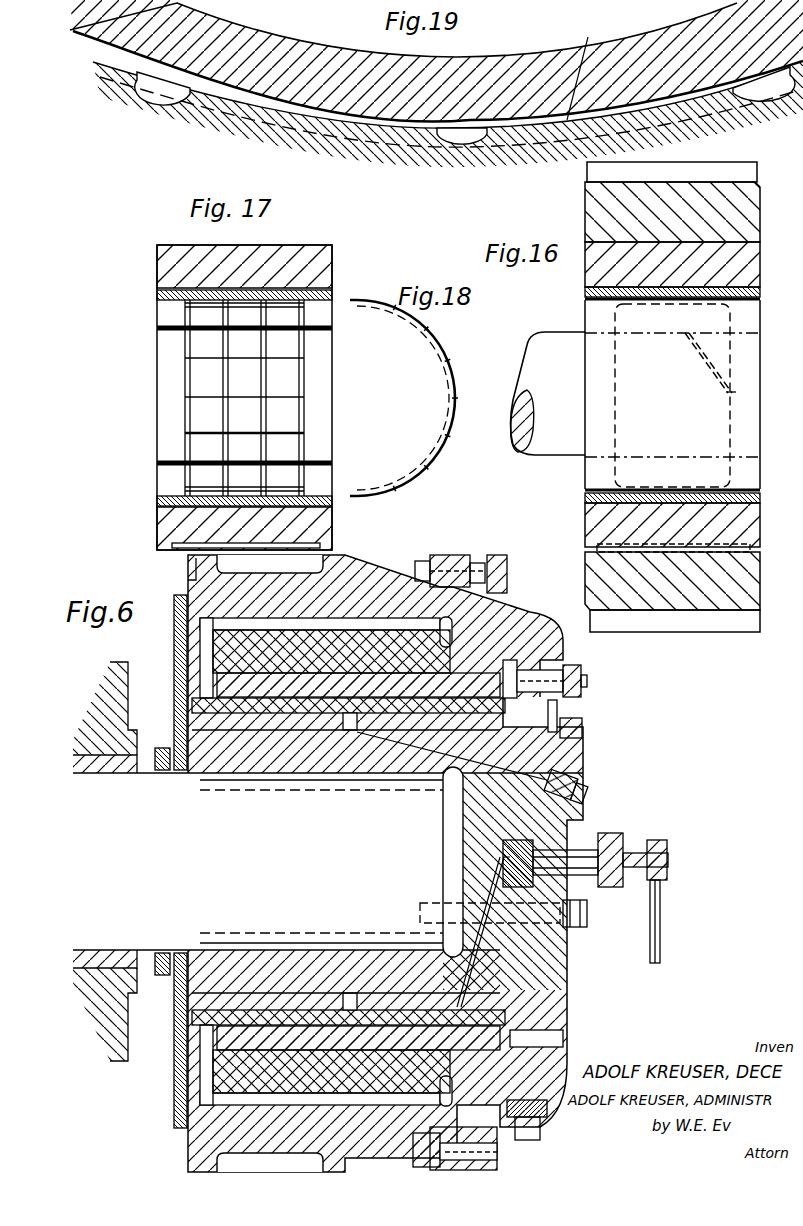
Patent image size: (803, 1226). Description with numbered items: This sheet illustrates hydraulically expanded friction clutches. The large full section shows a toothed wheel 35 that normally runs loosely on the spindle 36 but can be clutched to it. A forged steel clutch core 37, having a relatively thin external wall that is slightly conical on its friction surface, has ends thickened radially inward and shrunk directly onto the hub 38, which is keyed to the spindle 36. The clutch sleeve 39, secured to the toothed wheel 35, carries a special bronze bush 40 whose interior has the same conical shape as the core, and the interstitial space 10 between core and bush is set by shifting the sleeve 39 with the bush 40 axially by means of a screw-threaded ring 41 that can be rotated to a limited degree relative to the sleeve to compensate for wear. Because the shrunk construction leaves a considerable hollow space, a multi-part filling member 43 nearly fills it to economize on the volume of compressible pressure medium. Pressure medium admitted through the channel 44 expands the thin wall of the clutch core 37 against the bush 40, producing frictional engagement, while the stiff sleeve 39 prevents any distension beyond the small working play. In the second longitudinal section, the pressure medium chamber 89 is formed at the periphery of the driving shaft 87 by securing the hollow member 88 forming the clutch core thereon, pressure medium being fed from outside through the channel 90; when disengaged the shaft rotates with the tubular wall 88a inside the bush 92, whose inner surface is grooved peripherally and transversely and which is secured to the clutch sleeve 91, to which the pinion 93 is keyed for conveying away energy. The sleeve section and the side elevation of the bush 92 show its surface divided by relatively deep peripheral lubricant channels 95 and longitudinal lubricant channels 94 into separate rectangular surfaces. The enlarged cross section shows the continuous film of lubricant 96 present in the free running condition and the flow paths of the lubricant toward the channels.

In FIG. 6, the interstitial space 10 is at (433, 687).
In FIG. 6, the toothed wheel 35 is at (196, 580).
In FIG. 6, the spindle 36 is at (110, 932).
In FIG. 6, the clutch core 37 is at (197, 715).
In FIG. 6, the hub 38 is at (553, 757).
In FIG. 6, the clutch sleeve 39 is at (222, 650).
In FIG. 6, the bush 40 is at (217, 687).
In FIG. 6, the screw-threaded ring 41 is at (570, 712).
In FIG. 6, the filling member 43 is at (433, 722).
In FIG. 6, the channel 44 is at (470, 947).
In FIG. 16, the driving shaft 87 is at (541, 370).
In FIG. 16, the hollow member 88 is at (600, 480).
In FIG. 19, the tubular wall 88a is at (311, 50).
In FIG. 16, the tubular wall 88a is at (680, 493).
In FIG. 19, the pressure medium chamber 89 is at (448, 96).
In FIG. 16, the pressure medium chamber 89 is at (628, 325).
In FIG. 16, the channel 90 is at (750, 398).
In FIG. 17, the clutch sleeve 91 is at (306, 253).
In FIG. 16, the clutch sleeve 91 is at (755, 277).
In FIG. 17, the bush 92 is at (326, 295).
In FIG. 16, the bush 92 is at (587, 292).
In FIG. 16, the pinion 93 is at (587, 220).
In FIG. 19, the longitudinal lubricant channels 94 is at (167, 95).
In FIG. 17, the longitudinal lubricant channels 94 is at (285, 398).
In FIG. 18, the longitudinal lubricant channels 94 is at (424, 468).
In FIG. 19, the peripheral lubricant channels 95 is at (335, 133).
In FIG. 17, the peripheral lubricant channels 95 is at (265, 425).
In FIG. 18, the peripheral lubricant channels 95 is at (373, 497).
In FIG. 19, the film of lubricant 96 is at (583, 68).